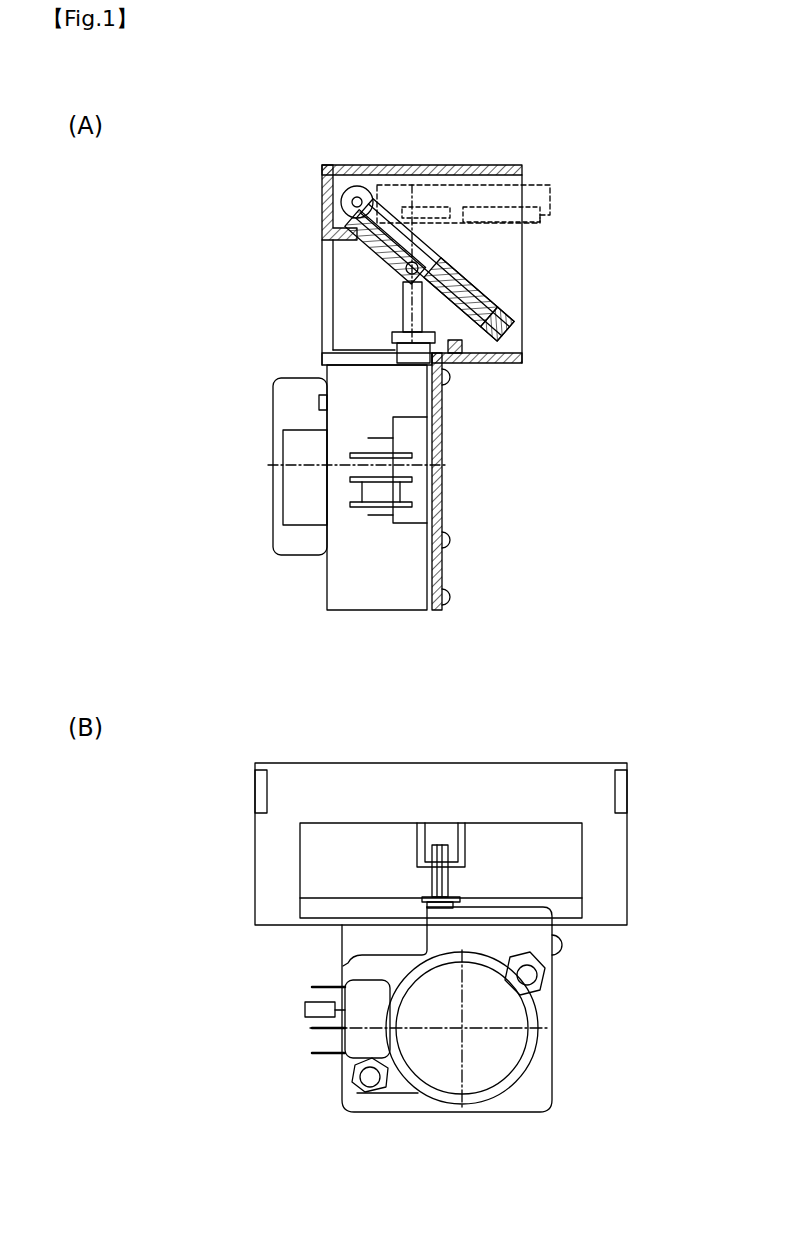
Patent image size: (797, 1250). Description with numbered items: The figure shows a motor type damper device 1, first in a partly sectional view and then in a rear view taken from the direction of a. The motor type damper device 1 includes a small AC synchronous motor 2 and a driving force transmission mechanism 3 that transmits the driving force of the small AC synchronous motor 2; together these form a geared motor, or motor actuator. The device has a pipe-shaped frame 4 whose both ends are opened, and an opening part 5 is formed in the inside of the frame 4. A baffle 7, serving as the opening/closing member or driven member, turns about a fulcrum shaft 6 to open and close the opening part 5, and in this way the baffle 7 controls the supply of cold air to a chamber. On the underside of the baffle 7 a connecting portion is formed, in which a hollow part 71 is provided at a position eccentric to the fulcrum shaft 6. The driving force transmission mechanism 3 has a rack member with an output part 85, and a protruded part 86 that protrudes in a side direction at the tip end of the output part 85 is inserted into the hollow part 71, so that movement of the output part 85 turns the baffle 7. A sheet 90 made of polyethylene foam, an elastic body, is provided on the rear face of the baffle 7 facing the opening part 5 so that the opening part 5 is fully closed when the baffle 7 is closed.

The motor type damper device 1 is at (565, 142).
The small AC synchronous motor 2 is at (300, 496).
The driving force transmission mechanism 3 is at (330, 621).
The frame 4 is at (512, 360).
The opening part 5 is at (375, 287).
The fulcrum shaft 6 is at (352, 202).
The baffle 7 is at (460, 293).
The hollow part 71 is at (357, 232).
The output part 85 is at (410, 313).
The protruded part 86 is at (418, 268).
The sheet 90 is at (482, 348).
The direction a is at (297, 264).